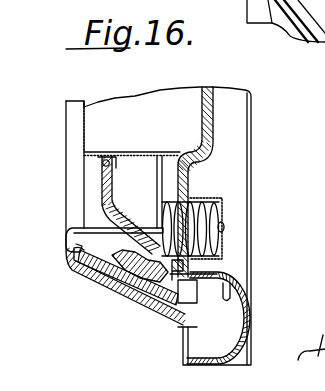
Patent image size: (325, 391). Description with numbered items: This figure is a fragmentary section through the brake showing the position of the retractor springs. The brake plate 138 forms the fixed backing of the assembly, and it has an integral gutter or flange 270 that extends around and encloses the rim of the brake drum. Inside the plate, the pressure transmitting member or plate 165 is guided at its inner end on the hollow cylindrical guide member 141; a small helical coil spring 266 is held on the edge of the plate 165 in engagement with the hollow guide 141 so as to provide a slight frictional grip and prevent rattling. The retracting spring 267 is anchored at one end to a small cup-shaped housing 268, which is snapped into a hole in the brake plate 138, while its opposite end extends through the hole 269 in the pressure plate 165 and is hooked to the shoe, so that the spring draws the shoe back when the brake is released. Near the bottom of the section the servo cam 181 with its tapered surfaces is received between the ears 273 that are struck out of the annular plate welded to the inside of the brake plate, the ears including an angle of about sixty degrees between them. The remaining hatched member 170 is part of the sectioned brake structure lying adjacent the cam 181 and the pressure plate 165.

The brake plate 138 is at (213, 123).
The hollow guide member 141 is at (151, 152).
The small helical coil spring 266 is at (110, 152).
The pressure transmitting member or plate 165 is at (102, 203).
The retracting spring 267 is at (222, 202).
The cup-shaped housing 268 is at (224, 226).
The hole in the pressure plate 269 is at (120, 242).
The latch arm 170 is at (145, 308).
The servo cam 181 is at (205, 284).
The ears 273 is at (197, 302).
The gutter or flange 270 is at (240, 319).